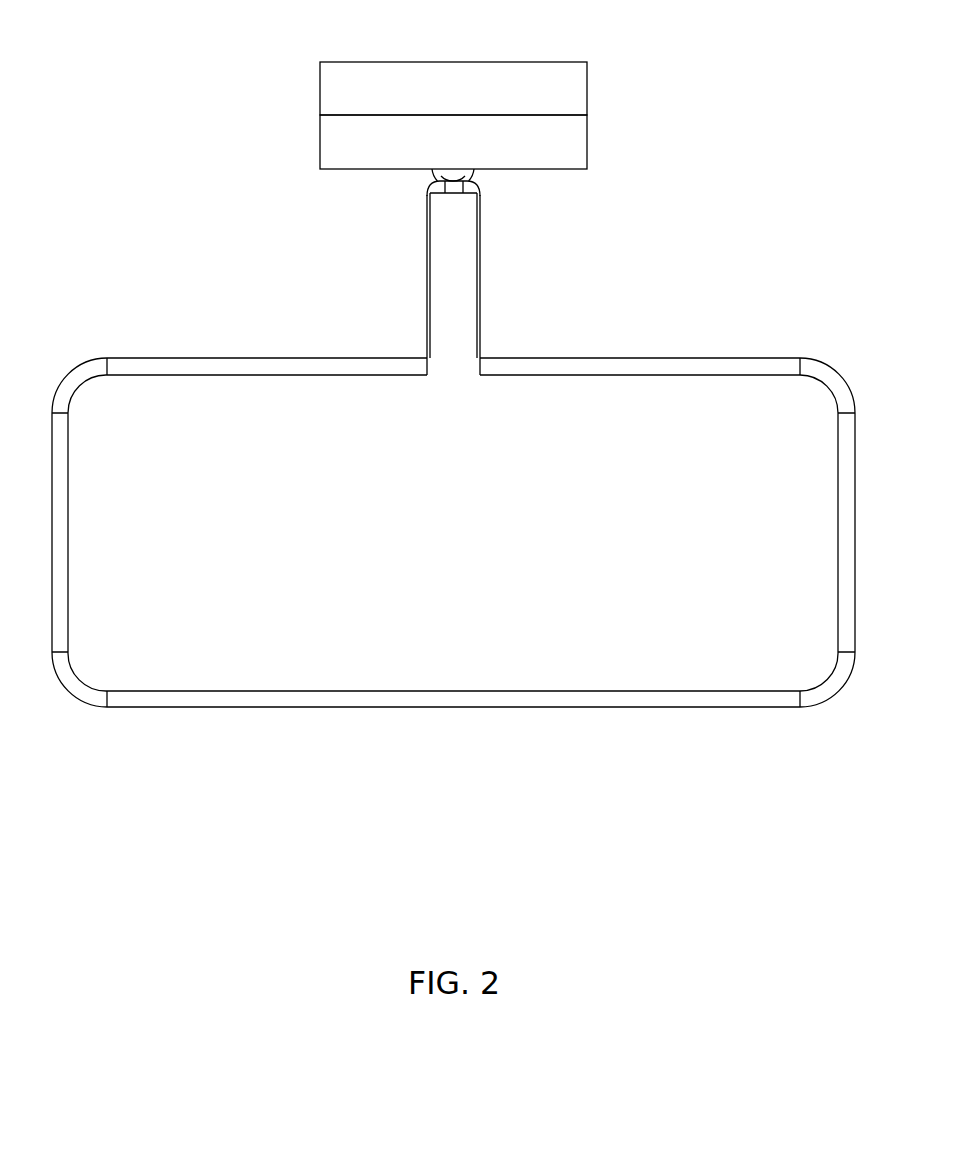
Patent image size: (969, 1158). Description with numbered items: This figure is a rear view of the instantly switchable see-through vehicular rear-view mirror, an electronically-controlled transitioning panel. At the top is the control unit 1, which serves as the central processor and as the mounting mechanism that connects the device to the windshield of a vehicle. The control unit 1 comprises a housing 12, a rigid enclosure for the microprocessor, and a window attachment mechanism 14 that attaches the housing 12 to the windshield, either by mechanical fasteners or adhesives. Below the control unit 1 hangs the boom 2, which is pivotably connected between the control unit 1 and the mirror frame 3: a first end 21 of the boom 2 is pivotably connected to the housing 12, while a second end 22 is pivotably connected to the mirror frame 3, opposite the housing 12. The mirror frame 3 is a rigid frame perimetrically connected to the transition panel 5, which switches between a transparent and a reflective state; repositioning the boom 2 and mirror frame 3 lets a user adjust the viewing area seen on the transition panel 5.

The control unit 1 is at (447, 112).
The housing 12 is at (337, 162).
The window attachment mechanism 14 is at (335, 90).
The boom 2 is at (450, 272).
The first end 21 is at (470, 188).
The second end 22 is at (462, 357).
The mirror frame 3 is at (453, 495).
The transition panel 5 is at (156, 390).